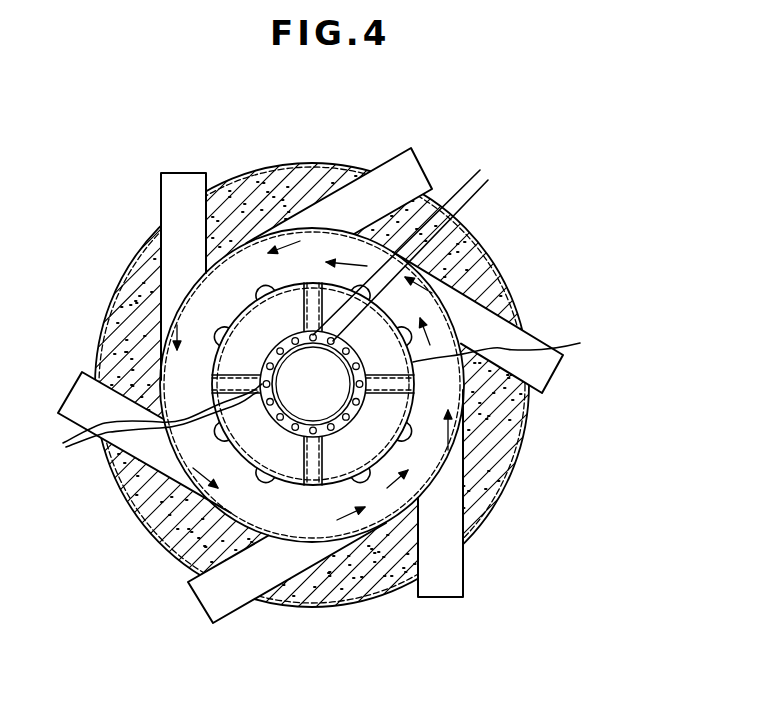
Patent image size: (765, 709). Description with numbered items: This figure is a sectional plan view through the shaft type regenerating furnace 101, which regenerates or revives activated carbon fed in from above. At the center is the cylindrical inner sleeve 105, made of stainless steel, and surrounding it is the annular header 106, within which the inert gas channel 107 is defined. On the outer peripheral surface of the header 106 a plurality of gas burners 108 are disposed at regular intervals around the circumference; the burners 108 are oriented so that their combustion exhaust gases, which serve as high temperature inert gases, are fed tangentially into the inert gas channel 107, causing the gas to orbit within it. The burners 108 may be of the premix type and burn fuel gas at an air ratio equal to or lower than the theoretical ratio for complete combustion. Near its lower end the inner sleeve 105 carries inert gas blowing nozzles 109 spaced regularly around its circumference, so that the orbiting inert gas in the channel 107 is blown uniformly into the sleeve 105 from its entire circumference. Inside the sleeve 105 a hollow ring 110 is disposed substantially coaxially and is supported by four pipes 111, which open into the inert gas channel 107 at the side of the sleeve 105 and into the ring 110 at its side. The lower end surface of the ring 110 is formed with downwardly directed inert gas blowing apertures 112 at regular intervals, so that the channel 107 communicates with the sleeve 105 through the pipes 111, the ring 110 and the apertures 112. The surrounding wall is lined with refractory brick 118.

The shaft type regenerating furnace 101 is at (502, 254).
The cylindrical inner sleeve 105 is at (248, 303).
The annular header 106 is at (120, 330).
The inert gas channel 107 is at (443, 400).
The gas burners 108 is at (375, 181).
The inert gas blowing nozzles 109 is at (238, 338).
The hollow ring 110 is at (332, 514).
The pipes 111 is at (204, 355).
The inert gas blowing apertures 112 is at (487, 166).
The refractory brick 118 is at (267, 196).